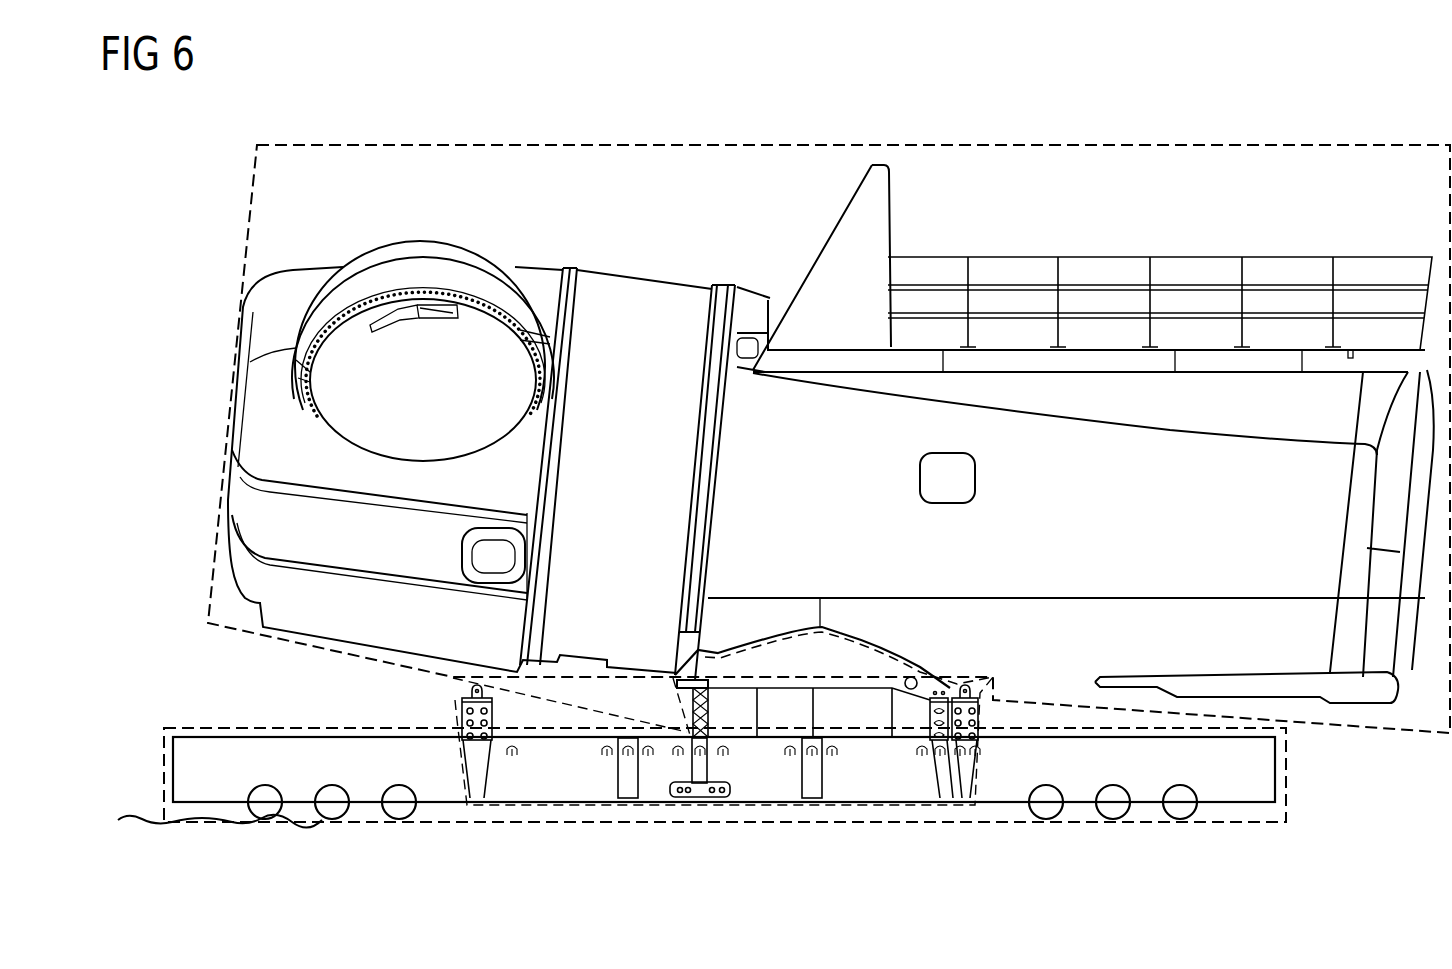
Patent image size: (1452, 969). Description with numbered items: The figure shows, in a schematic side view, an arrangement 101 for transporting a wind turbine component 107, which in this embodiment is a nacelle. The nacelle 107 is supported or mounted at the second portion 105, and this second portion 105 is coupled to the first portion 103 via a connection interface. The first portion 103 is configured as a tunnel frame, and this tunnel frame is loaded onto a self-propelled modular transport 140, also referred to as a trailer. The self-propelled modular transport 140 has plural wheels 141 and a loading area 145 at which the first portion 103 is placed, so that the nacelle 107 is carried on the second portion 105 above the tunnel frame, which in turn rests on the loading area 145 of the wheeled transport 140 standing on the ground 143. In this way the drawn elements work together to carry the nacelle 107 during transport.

The arrangement for transporting a wind turbine component 101 is at (366, 104).
The first portion 103 is at (458, 705).
The second portion 105 is at (878, 640).
The wind turbine component 107 is at (615, 143).
The self-propelled modular transport 140 is at (188, 765).
The wheels 141 is at (336, 808).
The ground 143 is at (126, 838).
The loading area 145 is at (1020, 738).